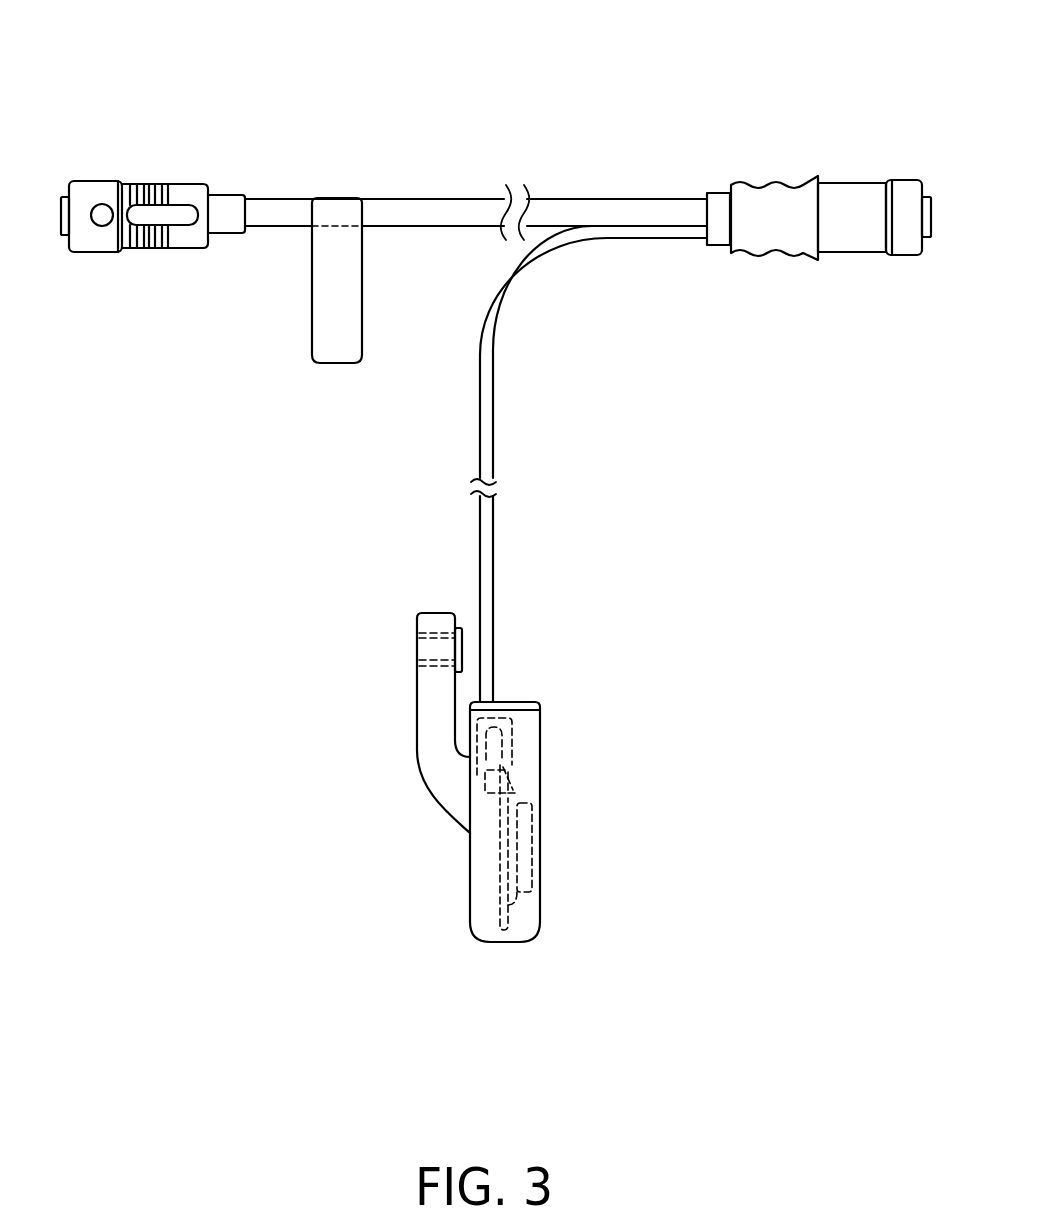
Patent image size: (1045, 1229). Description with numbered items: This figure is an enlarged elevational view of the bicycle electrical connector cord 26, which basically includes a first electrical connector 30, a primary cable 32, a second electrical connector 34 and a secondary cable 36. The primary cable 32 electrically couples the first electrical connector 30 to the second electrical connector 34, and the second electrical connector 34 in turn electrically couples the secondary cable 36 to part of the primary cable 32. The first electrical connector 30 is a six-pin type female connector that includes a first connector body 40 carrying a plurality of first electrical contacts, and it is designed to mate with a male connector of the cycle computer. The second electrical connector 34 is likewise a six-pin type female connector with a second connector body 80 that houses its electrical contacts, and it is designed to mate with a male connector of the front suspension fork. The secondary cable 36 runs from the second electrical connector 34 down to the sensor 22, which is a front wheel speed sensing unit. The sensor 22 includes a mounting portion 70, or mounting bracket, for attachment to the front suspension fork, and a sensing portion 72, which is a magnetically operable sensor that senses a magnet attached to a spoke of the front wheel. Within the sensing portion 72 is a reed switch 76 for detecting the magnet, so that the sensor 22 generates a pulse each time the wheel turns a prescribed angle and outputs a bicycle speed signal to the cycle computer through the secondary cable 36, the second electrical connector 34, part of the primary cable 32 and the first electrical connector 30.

The bicycle electrical connector cord 26 is at (632, 98).
The first electrical connector 30 is at (109, 173).
The first connector body 40 is at (103, 242).
The primary cable 32 is at (431, 193).
The second electrical connector 34 is at (835, 177).
The second connector body 80 is at (842, 235).
The secondary cable 36 is at (500, 393).
The mounting portion 70 is at (415, 680).
The sensor 22 is at (545, 832).
The reed switch 76 is at (518, 793).
The sensing portion 72 is at (540, 888).